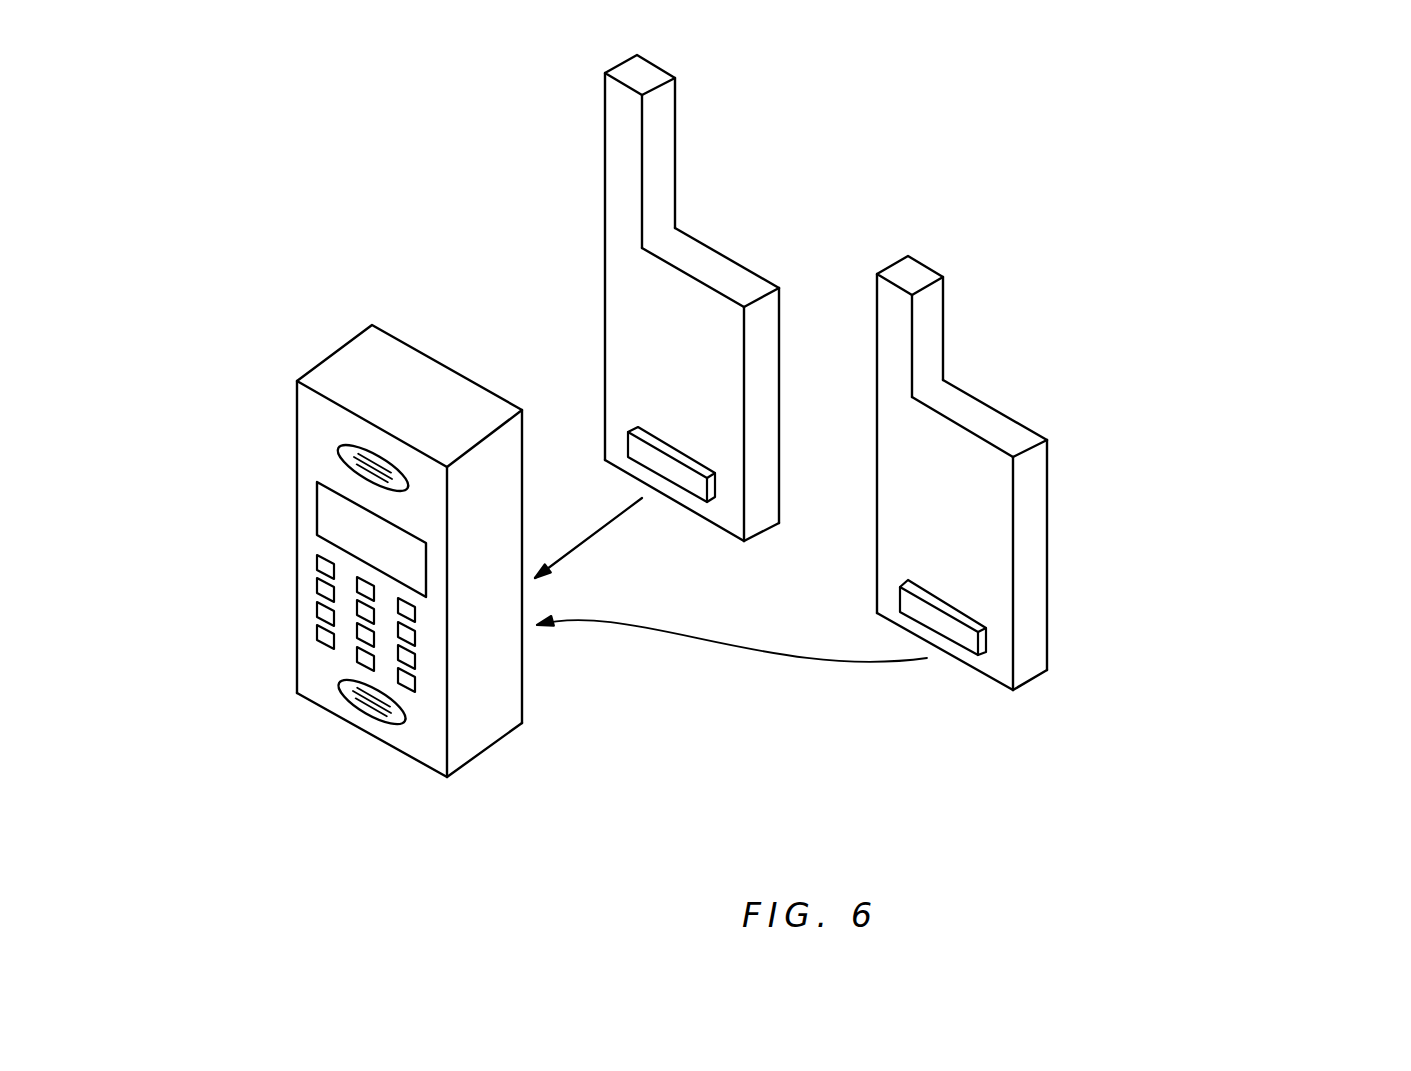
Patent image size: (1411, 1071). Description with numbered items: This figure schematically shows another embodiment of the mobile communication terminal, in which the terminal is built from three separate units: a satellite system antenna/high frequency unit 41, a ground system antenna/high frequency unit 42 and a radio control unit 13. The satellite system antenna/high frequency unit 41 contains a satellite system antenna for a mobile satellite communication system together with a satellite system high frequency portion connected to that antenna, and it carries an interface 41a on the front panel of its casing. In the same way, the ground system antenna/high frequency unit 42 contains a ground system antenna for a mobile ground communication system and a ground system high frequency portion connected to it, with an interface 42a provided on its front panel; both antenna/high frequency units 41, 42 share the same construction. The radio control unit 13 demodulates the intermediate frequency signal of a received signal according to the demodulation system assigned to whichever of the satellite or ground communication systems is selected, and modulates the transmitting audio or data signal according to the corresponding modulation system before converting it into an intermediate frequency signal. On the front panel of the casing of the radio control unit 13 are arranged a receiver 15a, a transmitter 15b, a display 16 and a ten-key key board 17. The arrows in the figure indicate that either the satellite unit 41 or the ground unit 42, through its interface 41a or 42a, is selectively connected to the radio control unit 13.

The radio control unit 13 is at (488, 733).
The receiver 15a is at (348, 446).
The transmitter 15b is at (348, 688).
The display 16 is at (327, 516).
The key board 17 is at (325, 613).
The satellite system antenna/high frequency unit 41 is at (667, 148).
The interface 41a is at (667, 448).
The ground system antenna/high frequency unit 42 is at (936, 337).
The interface 42a is at (947, 607).